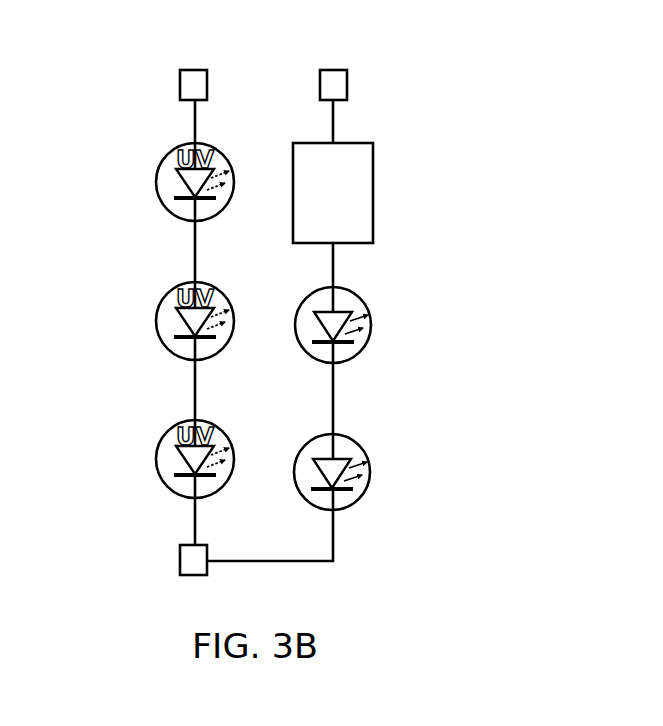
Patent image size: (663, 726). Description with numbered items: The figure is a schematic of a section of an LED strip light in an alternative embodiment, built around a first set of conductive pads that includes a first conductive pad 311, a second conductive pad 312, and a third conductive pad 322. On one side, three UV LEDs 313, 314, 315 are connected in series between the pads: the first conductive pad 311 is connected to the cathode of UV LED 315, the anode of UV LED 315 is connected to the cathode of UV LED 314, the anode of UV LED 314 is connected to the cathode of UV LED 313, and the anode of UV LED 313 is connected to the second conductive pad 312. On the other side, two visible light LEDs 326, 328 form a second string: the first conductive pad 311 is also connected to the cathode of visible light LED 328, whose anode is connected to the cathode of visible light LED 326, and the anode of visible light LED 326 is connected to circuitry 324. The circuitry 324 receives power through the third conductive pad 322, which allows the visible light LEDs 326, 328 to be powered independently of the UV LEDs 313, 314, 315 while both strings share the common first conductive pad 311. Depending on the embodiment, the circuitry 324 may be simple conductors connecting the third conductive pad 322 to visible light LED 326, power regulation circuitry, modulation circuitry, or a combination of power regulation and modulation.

The first conductive pad 311 is at (193, 558).
The second conductive pad 312 is at (192, 84).
The UV LED 313 is at (166, 206).
The UV LED 314 is at (161, 347).
The UV LED 315 is at (157, 473).
The third conductive pad 322 is at (337, 88).
The circuitry 324 is at (373, 154).
The visible light LED 326 is at (364, 297).
The visible light LED 328 is at (361, 442).